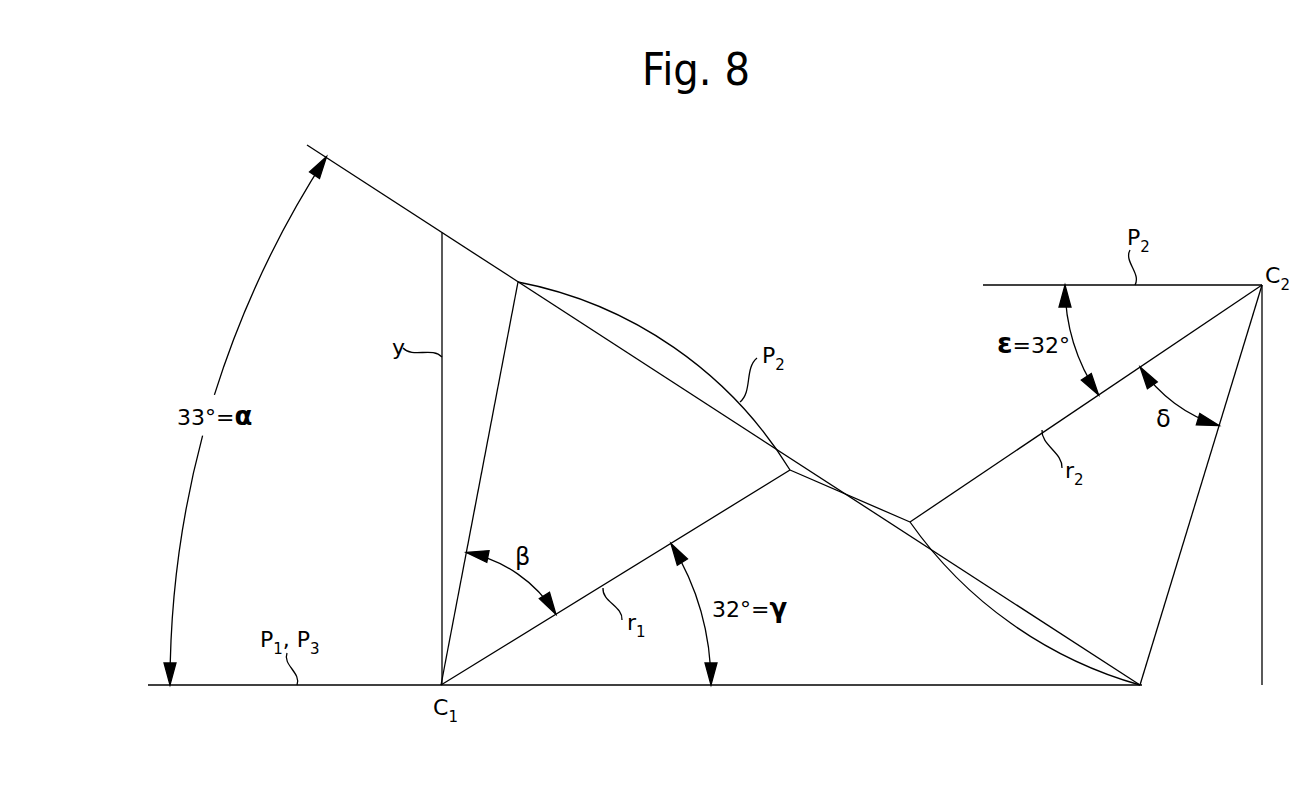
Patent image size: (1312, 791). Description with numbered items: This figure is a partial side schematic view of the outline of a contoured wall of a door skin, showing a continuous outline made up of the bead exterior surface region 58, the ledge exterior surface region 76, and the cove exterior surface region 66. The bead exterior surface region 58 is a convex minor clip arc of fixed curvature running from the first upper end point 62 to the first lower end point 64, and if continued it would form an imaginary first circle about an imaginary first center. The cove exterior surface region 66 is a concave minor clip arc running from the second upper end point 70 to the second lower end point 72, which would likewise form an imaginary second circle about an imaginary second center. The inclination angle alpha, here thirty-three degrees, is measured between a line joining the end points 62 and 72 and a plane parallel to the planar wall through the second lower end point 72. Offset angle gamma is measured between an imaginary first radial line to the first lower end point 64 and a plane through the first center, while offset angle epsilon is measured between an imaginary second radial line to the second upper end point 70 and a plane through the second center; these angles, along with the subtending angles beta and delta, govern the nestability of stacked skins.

The bead exterior surface region 58 is at (688, 355).
The first upper end point 62 is at (520, 280).
The first lower end point 64 is at (790, 472).
The cove exterior surface region 66 is at (1003, 620).
The second upper end point 70 is at (910, 518).
The second lower end point 72 is at (1145, 688).
The ledge exterior surface region 76 is at (880, 505).